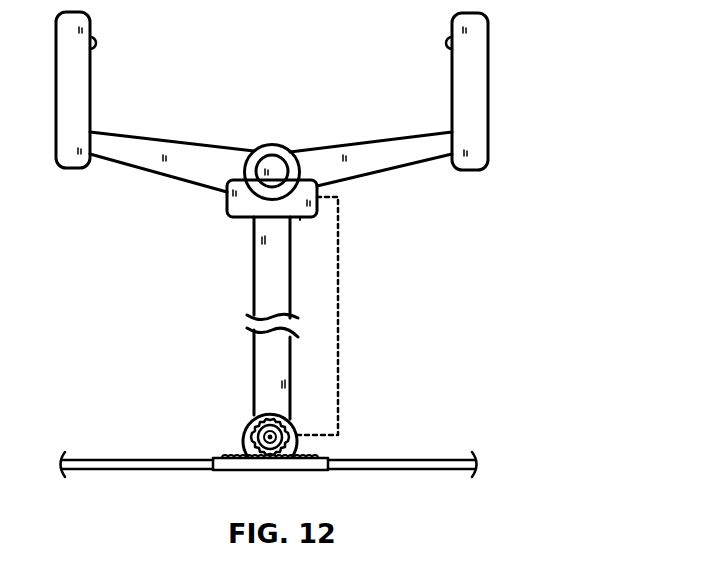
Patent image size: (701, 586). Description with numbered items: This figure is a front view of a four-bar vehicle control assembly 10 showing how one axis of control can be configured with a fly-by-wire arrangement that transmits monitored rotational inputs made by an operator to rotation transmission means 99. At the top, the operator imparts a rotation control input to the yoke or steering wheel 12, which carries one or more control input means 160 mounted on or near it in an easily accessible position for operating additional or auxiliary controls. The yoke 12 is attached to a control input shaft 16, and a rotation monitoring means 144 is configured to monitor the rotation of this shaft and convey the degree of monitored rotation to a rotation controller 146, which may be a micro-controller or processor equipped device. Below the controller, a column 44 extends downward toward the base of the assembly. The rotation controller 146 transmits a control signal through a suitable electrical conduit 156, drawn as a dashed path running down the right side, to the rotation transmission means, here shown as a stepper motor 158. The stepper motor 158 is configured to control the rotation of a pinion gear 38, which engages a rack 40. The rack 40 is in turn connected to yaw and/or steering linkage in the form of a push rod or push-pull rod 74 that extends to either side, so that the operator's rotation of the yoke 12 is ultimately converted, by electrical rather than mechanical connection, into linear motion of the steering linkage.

The vehicle 10 is at (548, 81).
The yoke 12 is at (378, 137).
The control input shaft 16 is at (255, 171).
The pinion gear 38 is at (275, 414).
The rack 40 is at (230, 470).
The column 44 is at (254, 258).
The push-pull rod 74 is at (113, 460).
The rotation transmission means 99 is at (305, 219).
The rotation monitoring means 144 is at (272, 144).
The rotation controller 146 is at (227, 196).
The electrical conduit 156 is at (338, 313).
The stepper motor 158 is at (243, 440).
The control input means 160 is at (96, 43).